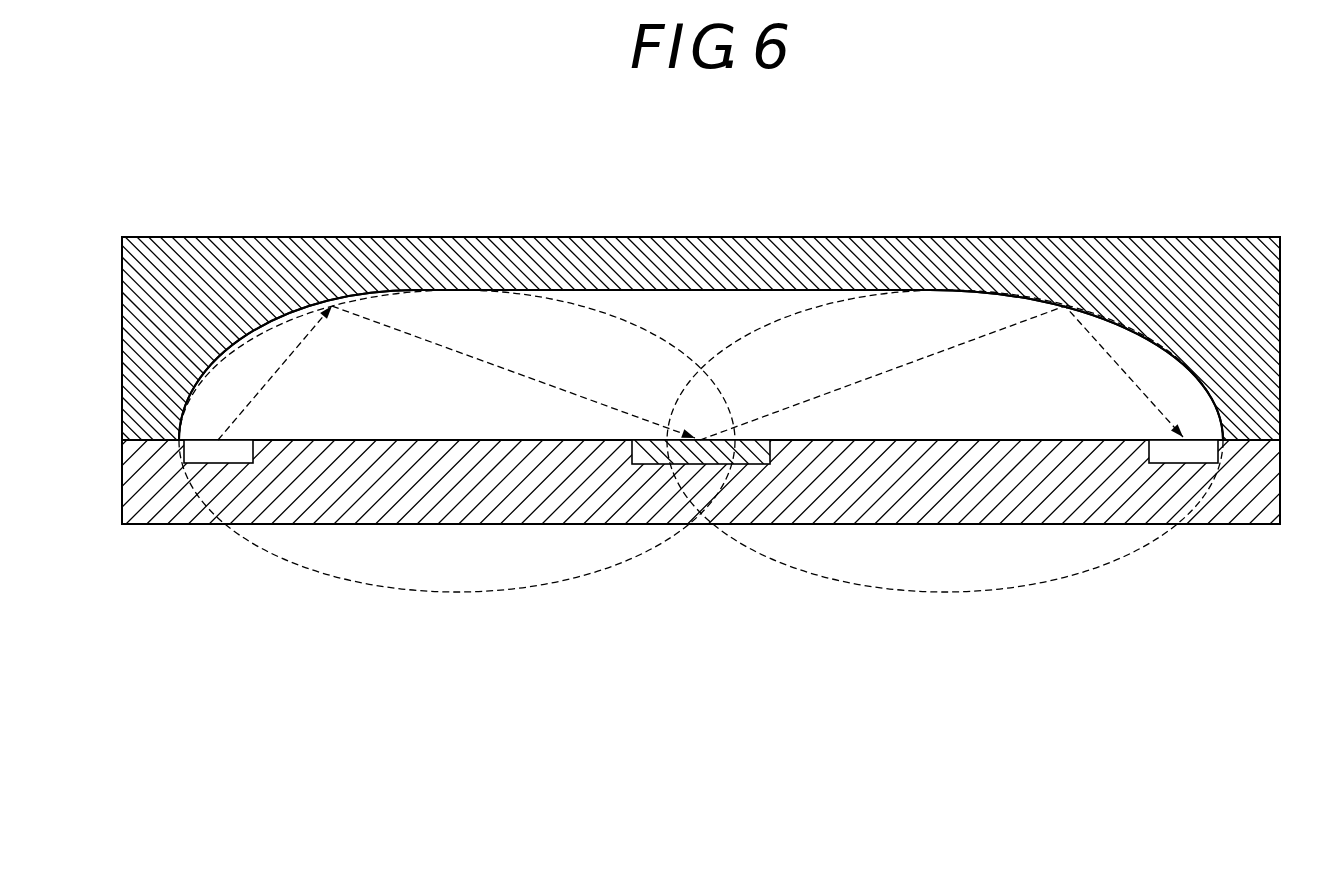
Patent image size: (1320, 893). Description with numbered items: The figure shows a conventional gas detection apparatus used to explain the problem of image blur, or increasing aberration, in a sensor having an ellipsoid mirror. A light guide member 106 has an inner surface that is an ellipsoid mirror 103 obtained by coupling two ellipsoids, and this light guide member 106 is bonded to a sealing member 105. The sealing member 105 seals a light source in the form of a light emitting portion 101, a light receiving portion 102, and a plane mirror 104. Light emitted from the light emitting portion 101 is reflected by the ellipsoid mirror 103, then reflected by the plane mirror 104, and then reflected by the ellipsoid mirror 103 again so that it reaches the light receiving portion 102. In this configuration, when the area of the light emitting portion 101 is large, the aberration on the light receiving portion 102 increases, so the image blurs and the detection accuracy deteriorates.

The light emitting portion 101 is at (237, 448).
The light receiving portion 102 is at (1167, 450).
The ellipsoid mirror 103 is at (935, 290).
The plane mirror 104 is at (759, 453).
The sealing member 105 is at (450, 497).
The light guide member 106 is at (705, 250).